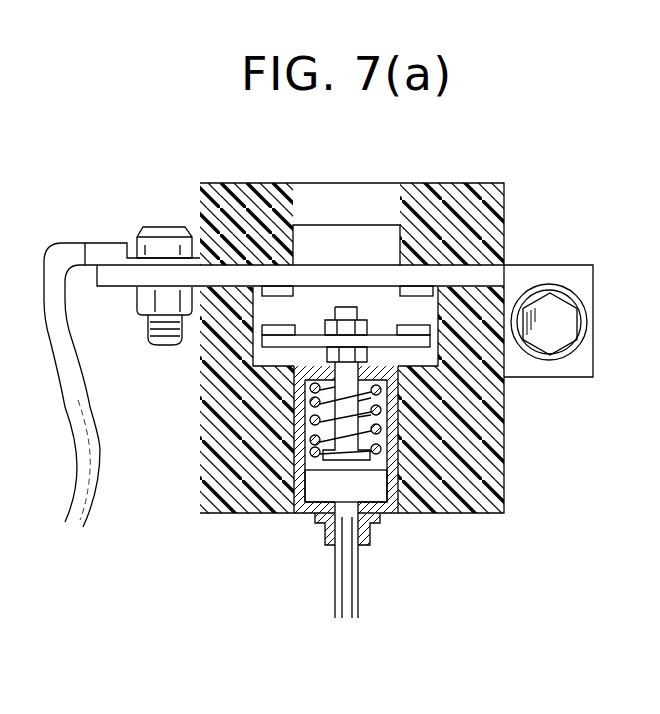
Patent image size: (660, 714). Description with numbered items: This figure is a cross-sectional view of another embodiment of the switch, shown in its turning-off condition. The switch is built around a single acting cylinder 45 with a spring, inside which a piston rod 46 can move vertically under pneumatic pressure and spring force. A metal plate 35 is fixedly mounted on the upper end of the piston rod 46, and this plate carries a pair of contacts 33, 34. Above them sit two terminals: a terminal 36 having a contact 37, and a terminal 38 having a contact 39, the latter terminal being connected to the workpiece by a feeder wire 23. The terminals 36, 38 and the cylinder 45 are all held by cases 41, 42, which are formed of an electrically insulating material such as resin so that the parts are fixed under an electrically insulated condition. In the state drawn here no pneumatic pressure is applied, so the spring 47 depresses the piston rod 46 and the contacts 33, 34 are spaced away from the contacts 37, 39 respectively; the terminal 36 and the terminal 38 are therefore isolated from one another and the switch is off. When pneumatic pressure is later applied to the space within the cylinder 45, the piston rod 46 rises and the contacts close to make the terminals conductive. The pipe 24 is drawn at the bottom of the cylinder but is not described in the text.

The feeder wire 23 is at (100, 415).
The pipe 24 is at (362, 576).
The contact 33 is at (426, 335).
The contact 34 is at (267, 333).
The metal plate 35 is at (410, 344).
The terminal 36 is at (573, 268).
The contact 37 is at (414, 284).
The terminal 38 is at (152, 277).
The contact 39 is at (270, 292).
The case 41 is at (487, 202).
The case 42 is at (482, 420).
The single acting cylinder 45 is at (398, 478).
The piston rod 46 is at (343, 428).
The spring 47 is at (318, 420).